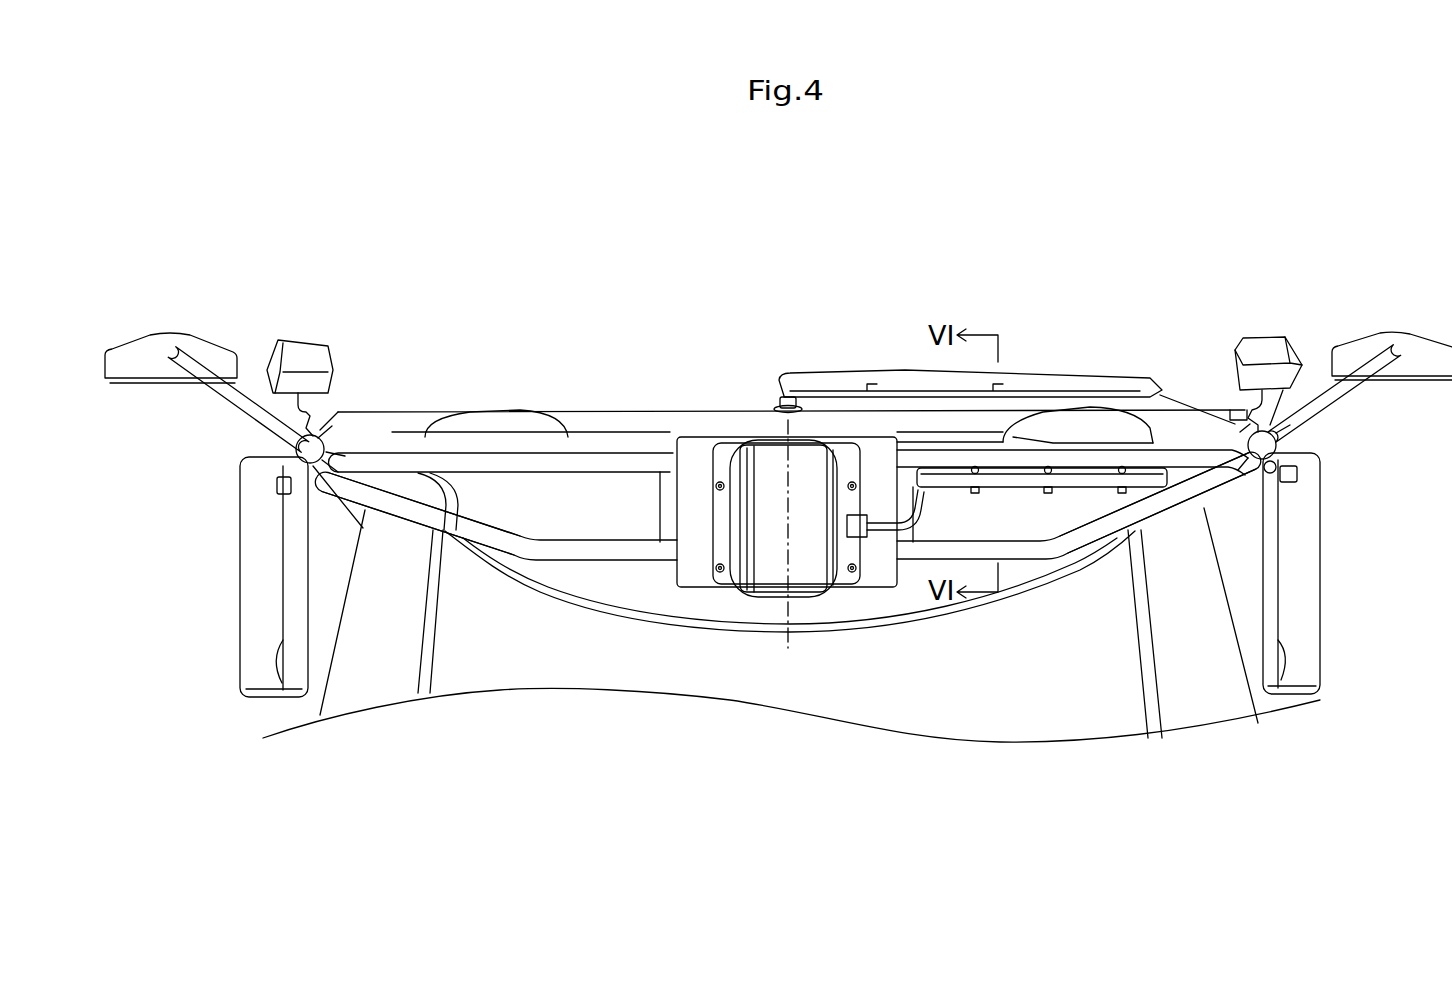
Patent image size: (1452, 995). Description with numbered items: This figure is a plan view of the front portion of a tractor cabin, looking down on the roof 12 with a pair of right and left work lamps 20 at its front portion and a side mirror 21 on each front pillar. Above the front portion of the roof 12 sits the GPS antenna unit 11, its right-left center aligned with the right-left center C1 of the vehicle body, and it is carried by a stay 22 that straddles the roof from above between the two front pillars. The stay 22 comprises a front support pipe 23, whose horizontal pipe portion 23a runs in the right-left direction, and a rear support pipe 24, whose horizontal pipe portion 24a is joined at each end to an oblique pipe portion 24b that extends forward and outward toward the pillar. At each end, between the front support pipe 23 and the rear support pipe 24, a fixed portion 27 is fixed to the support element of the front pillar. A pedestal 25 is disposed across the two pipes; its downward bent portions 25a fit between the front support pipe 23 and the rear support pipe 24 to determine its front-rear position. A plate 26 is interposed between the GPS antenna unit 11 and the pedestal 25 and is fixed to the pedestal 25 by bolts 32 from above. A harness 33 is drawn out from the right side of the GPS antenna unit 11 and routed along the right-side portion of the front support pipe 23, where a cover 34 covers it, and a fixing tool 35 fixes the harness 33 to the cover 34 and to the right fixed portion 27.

The GPS antenna unit 11 is at (772, 450).
The roof 12 is at (1205, 647).
The work lamp 20 is at (478, 428).
The side mirror 21 is at (148, 352).
The stay 22 is at (400, 528).
The front support pipe 23 is at (600, 450).
The horizontal pipe portion 23a is at (1037, 462).
The rear support pipe 24 is at (560, 568).
The horizontal pipe portion 24a is at (604, 555).
The oblique pipe portion 24b is at (463, 532).
The pedestal 25 is at (880, 580).
The bent portion 25a is at (667, 505).
The plate 26 is at (720, 545).
The fixed portion 27 is at (347, 428).
The bolt 32 is at (718, 482).
The harness 33 is at (923, 508).
The cover 34 is at (1100, 483).
The fixing tool 35 is at (1122, 466).
The right-left center of the vehicle body C1 is at (788, 551).